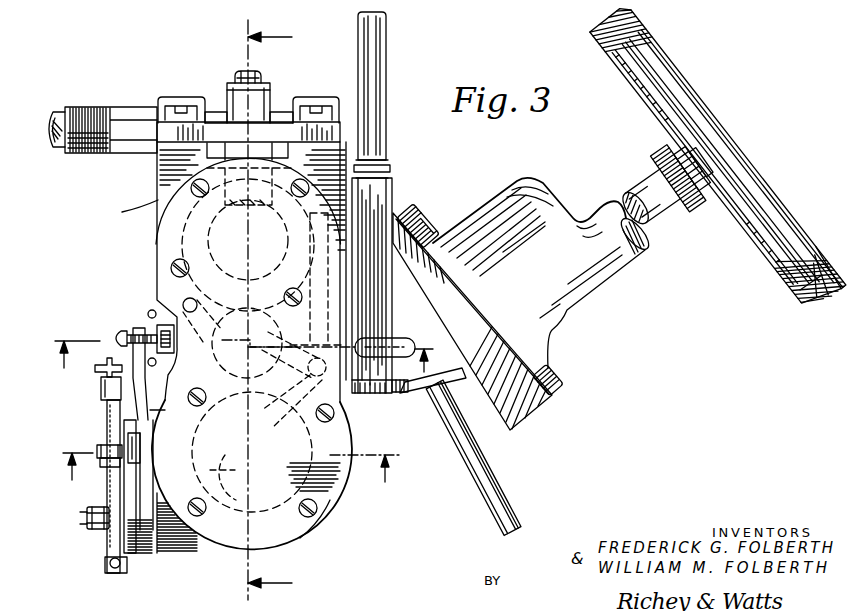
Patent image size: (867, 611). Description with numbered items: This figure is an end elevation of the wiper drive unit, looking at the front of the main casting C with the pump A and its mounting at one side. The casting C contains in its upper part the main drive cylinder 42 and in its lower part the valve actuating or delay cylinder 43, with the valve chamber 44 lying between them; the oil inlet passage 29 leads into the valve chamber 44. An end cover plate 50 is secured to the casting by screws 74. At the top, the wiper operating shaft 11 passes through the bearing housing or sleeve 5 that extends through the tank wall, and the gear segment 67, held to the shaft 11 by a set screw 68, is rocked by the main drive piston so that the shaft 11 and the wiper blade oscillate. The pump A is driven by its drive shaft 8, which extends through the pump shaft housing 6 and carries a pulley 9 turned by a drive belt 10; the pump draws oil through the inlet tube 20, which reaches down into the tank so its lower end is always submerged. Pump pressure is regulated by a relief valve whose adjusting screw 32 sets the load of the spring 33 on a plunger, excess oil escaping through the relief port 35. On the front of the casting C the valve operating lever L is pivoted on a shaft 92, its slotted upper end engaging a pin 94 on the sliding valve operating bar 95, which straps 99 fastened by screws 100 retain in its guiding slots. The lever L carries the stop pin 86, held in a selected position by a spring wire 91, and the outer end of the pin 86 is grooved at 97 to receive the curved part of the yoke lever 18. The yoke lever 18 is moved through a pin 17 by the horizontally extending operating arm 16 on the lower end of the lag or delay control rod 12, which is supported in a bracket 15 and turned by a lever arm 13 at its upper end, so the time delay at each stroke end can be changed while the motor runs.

The wiper drive shaft bearing housing 5 is at (126, 128).
The pump shaft housing 6 is at (660, 196).
The pump drive shaft 8 is at (696, 212).
The pulley 9 is at (672, 64).
The drive belt 10 is at (817, 300).
The wiper operating shaft 11 is at (62, 110).
The lag or delay control rod 12 is at (270, 310).
The lever arm 13 is at (228, 484).
The bracket 15 is at (254, 363).
The operating arm 16 is at (101, 398).
The pin 17 is at (106, 366).
The yoke lever 18 is at (113, 398).
The pump inlet tube 20 is at (466, 455).
The inlet passage 29 is at (274, 392).
The adjusting screw 32 is at (372, 73).
The spring 33 is at (396, 294).
The relief port 35 is at (396, 301).
The main drive cylinder 42 is at (210, 236).
The delay cylinder 43 is at (226, 476).
The valve chamber 44 is at (252, 452).
The end cover plate 50 is at (330, 507).
The gear segment 67 is at (262, 101).
The set screw 68 is at (265, 78).
The screws 74 is at (192, 162).
The stop pin 86 is at (104, 466).
The spring wire 91 is at (141, 449).
The shaft 92 is at (98, 530).
The pin 94 is at (137, 331).
The valve operating bar 95 is at (163, 325).
The groove 97 is at (103, 446).
The straps 99 is at (162, 352).
The screws 100 is at (162, 366).
The pump A is at (520, 205).
The main casting C is at (131, 212).
The valve operating lever L is at (164, 410).